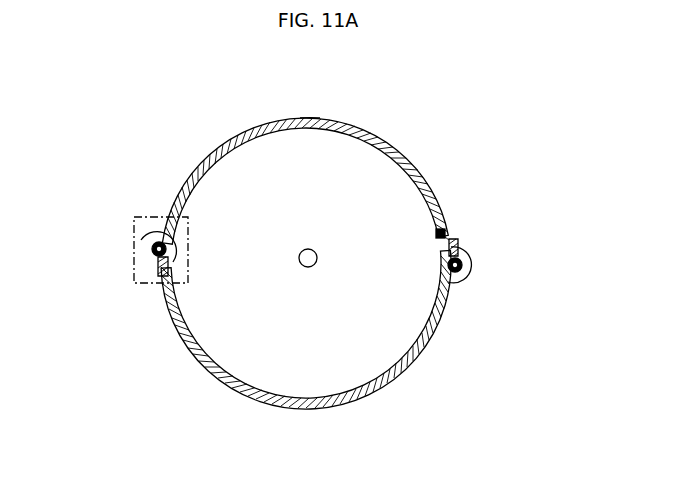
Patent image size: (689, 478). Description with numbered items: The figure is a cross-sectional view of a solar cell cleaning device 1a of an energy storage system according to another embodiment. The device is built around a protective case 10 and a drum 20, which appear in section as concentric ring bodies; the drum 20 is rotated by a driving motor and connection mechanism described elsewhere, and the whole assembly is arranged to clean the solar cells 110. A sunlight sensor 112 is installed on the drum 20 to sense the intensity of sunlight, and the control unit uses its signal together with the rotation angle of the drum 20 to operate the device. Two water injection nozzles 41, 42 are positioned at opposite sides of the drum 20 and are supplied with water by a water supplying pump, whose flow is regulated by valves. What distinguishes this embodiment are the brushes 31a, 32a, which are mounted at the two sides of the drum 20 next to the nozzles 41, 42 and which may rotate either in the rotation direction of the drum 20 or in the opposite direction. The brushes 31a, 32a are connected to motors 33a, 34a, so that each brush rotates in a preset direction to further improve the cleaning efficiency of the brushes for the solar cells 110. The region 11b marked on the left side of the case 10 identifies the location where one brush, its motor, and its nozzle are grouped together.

The solar cell cleaning device 1a is at (474, 122).
The protective case 10 is at (372, 402).
The drum 20 is at (364, 152).
The solar cells 110 is at (298, 118).
The sunlight sensor 112 is at (444, 232).
The hinge region 11b is at (150, 217).
The brush 31a is at (152, 250).
The brush 32a is at (470, 263).
The motor 33a is at (141, 238).
The second hinge knuckle 34a is at (472, 270).
The water injection nozzle 41 is at (160, 268).
The water injection nozzle 42 is at (460, 248).